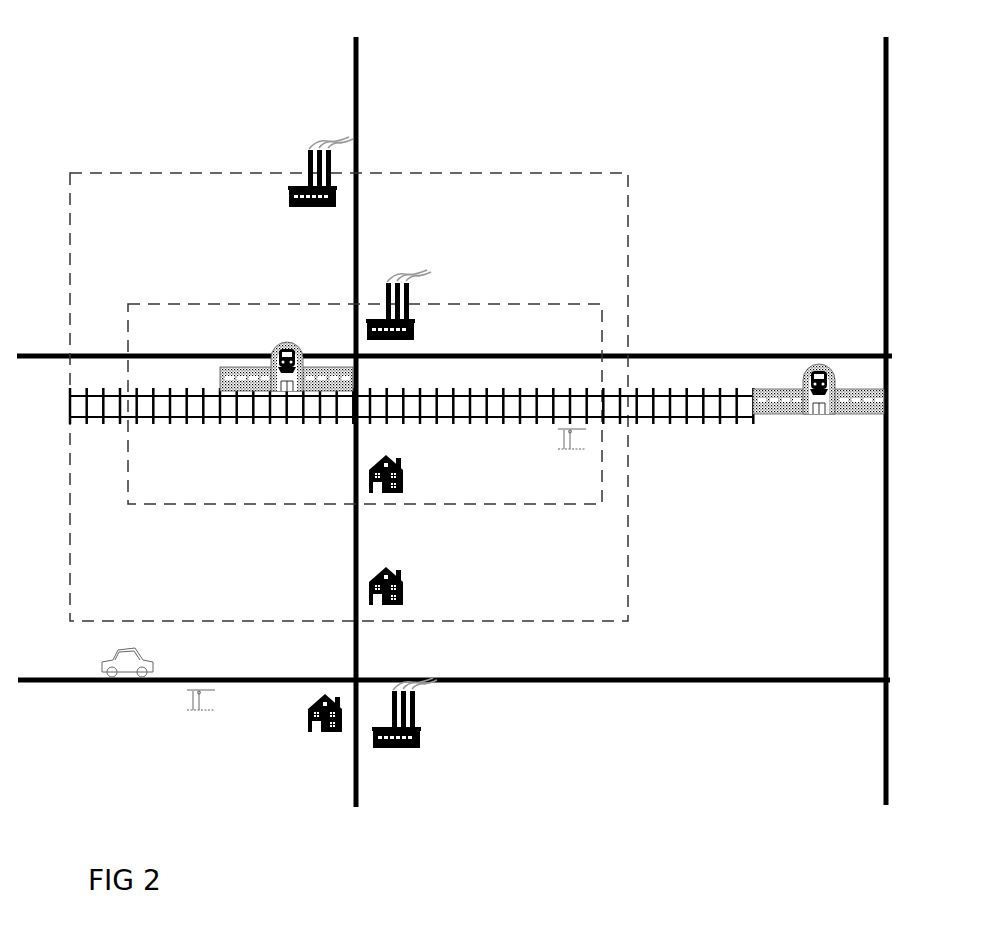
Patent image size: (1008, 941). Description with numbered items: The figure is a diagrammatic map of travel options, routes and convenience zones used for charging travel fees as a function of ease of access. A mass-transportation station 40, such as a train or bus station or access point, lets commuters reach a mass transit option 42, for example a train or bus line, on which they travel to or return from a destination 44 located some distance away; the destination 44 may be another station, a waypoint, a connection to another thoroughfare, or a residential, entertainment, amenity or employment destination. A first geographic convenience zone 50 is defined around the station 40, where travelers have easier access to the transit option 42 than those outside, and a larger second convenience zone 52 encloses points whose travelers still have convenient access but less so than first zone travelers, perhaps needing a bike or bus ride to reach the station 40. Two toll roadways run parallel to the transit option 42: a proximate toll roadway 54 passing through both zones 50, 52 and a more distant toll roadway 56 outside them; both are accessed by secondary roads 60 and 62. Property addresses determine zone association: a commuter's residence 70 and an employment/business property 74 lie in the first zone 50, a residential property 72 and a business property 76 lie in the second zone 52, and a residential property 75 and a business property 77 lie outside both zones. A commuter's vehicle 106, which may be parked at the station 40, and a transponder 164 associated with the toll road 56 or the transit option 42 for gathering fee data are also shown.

The mass-transportation station 40 is at (271, 354).
The mass transit option 42 is at (220, 424).
The destination 44 is at (769, 414).
The first geographic convenience zone 50 is at (238, 304).
The second convenience zone 52 is at (187, 172).
The proximate toll roadway 54 is at (747, 355).
The more distant toll roadway 56 is at (765, 679).
The secondary road 60 is at (353, 95).
The secondary road 62 is at (884, 73).
The commuter's residence 70 is at (403, 480).
The residential property 72 is at (403, 587).
The employment/business property 74 is at (413, 323).
The residential property 75 is at (308, 725).
The business property 76 is at (300, 207).
The business property 77 is at (420, 745).
The vehicle 106 is at (100, 663).
The transponder 164 is at (192, 703).